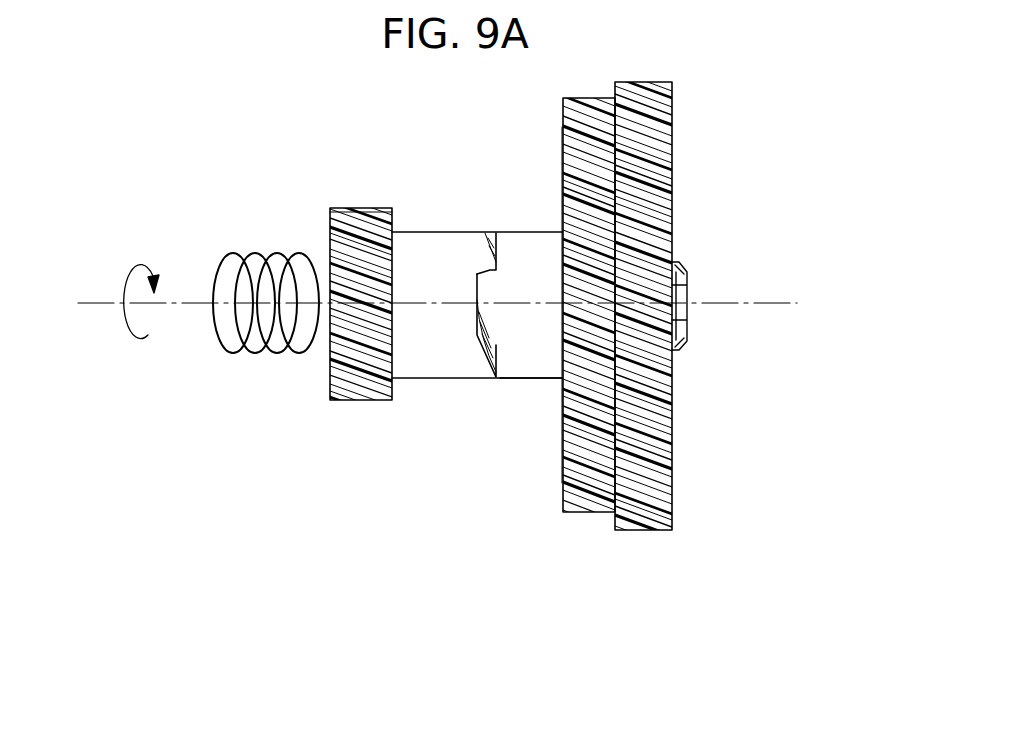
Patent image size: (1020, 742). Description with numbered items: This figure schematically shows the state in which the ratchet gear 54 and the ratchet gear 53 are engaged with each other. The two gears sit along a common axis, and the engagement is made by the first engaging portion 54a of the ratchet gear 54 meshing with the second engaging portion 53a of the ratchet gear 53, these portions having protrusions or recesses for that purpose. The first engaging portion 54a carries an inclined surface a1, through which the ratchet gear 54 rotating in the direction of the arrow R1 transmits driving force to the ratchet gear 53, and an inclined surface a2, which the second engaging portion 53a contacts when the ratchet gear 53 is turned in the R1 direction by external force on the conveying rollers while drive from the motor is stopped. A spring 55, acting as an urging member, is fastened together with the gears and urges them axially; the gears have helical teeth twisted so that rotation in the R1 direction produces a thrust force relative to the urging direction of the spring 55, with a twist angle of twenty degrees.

The arrow R1 direction R1 is at (119, 293).
The spring 55 is at (265, 355).
The ratchet gear 53 is at (363, 400).
The second engaging portion 53a is at (425, 252).
The inclined surface (first surface) a1 is at (491, 264).
The inclined surface (second surface) a2 is at (492, 337).
The first engaging portion 54a is at (533, 358).
The ratchet gear 54 is at (628, 530).